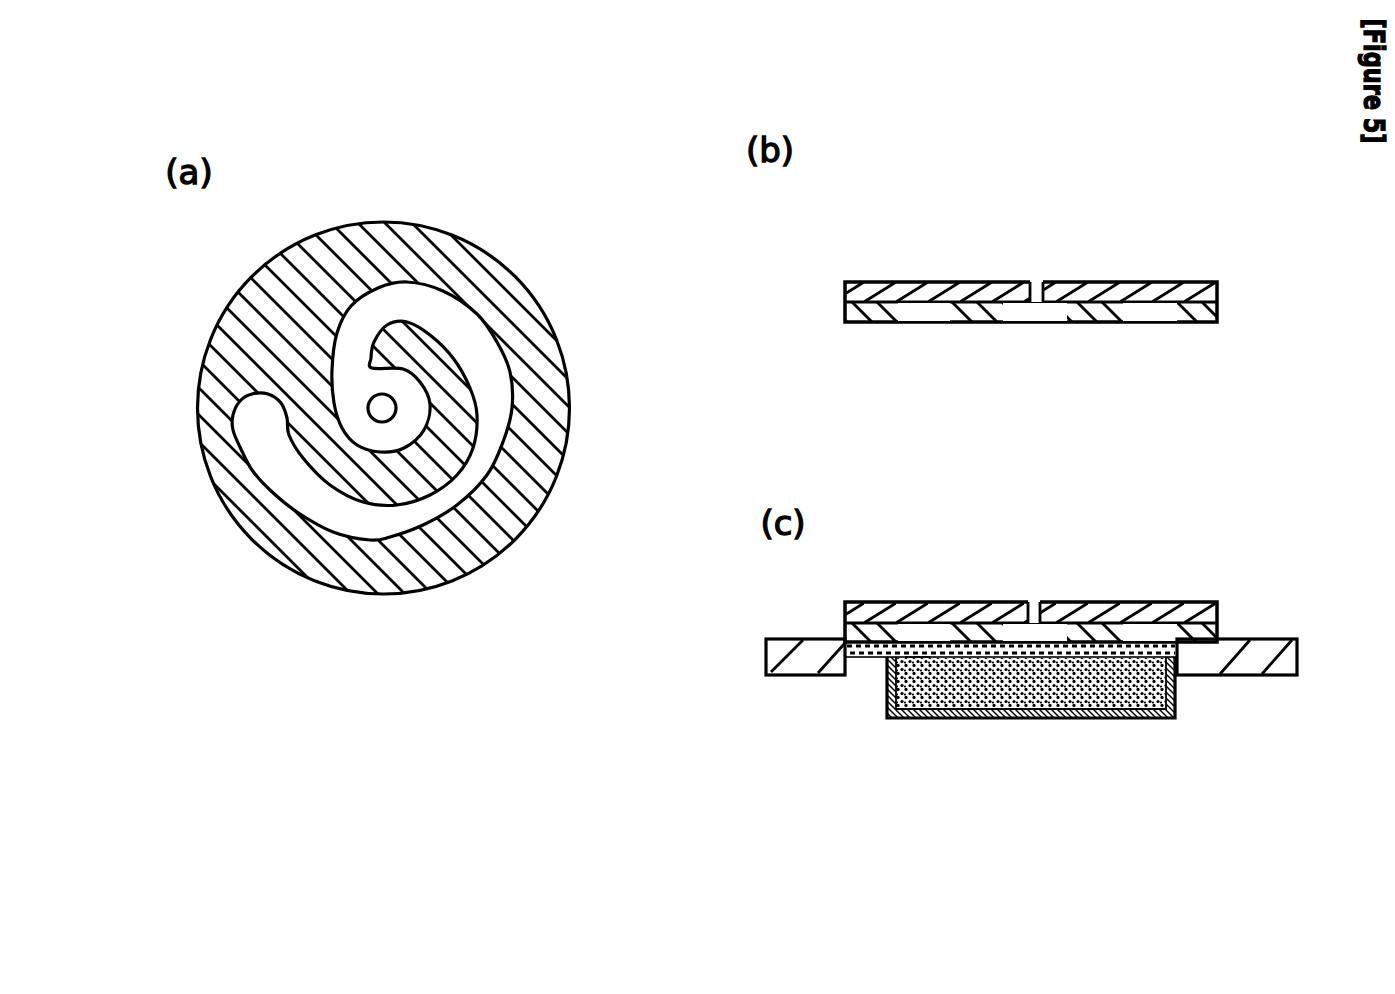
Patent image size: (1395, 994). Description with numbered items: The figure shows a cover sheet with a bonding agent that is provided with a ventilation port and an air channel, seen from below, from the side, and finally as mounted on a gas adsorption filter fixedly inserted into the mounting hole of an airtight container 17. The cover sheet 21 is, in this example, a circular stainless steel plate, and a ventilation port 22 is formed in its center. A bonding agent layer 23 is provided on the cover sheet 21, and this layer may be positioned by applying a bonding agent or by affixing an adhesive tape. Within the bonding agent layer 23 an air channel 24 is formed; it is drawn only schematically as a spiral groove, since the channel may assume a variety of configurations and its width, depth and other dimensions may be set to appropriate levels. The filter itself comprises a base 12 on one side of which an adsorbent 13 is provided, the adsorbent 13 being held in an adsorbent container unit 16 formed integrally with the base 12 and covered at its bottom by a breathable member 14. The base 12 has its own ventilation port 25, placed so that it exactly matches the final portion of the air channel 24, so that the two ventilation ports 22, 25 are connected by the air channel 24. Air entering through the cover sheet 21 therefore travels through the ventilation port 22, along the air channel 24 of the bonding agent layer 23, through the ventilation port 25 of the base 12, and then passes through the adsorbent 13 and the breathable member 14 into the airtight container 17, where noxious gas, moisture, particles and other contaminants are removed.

The base 12 is at (1112, 660).
The adsorbent 13 is at (1012, 693).
The breathable member 14 is at (1083, 718).
The adsorbent container unit 16 is at (1253, 660).
The airtight container 17 is at (860, 670).
The cover sheet 21 is at (963, 288).
The ventilation port 22 is at (384, 406).
The bonding agent layer 23 is at (413, 594).
The air channel 24 is at (503, 410).
The ventilation port 25 is at (918, 660).